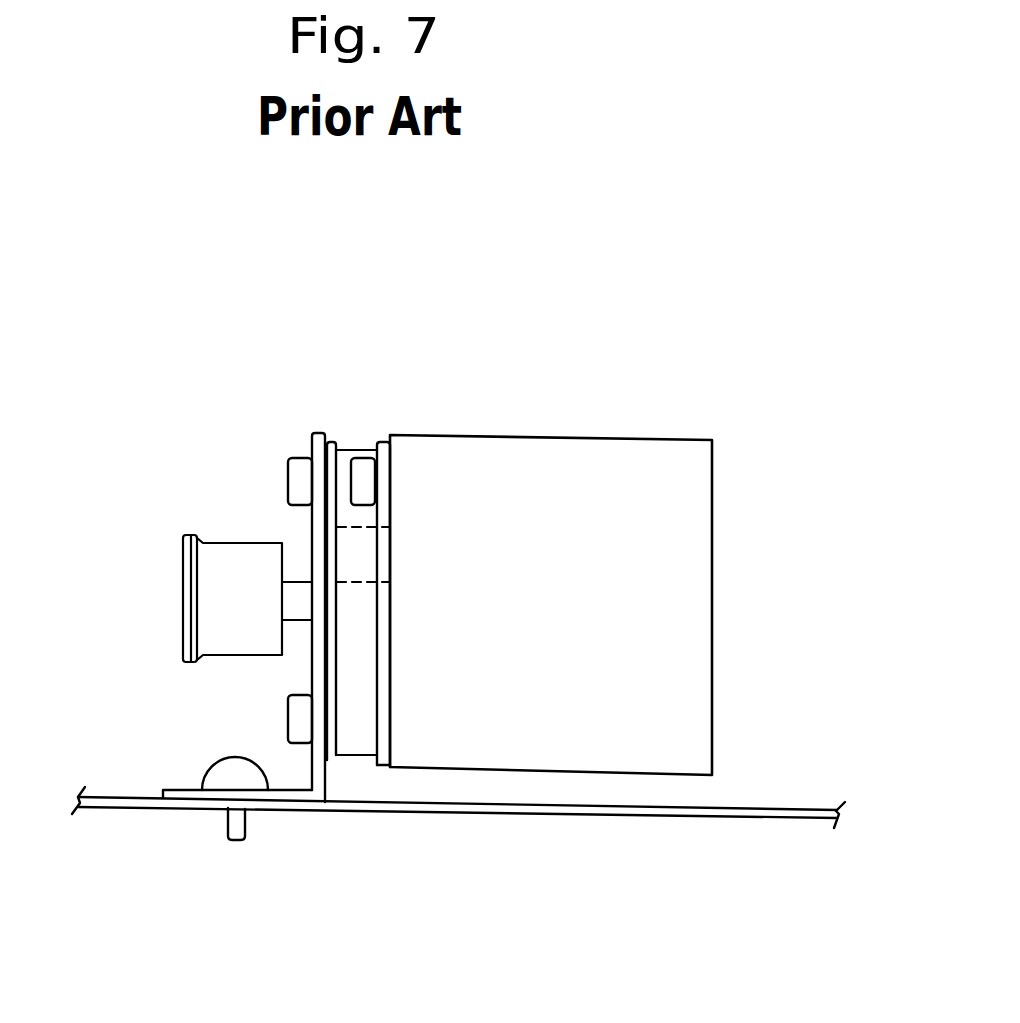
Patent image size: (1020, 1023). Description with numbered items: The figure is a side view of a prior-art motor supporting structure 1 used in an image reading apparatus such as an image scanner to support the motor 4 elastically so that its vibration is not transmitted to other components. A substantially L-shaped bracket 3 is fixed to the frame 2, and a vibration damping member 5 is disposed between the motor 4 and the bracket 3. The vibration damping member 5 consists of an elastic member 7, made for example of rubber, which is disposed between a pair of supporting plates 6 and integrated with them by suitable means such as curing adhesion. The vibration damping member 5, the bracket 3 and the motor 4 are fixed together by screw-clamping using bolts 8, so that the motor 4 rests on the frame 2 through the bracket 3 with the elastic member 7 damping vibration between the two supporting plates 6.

The motor supporting structure 1 is at (225, 623).
The frame 2 is at (565, 813).
The bracket 3 is at (317, 448).
The motor 4 is at (572, 478).
The vibration damping member 5 is at (341, 732).
The supporting plates 6 is at (330, 757).
The elastic member 7 is at (355, 735).
The bolts 8 is at (367, 475).